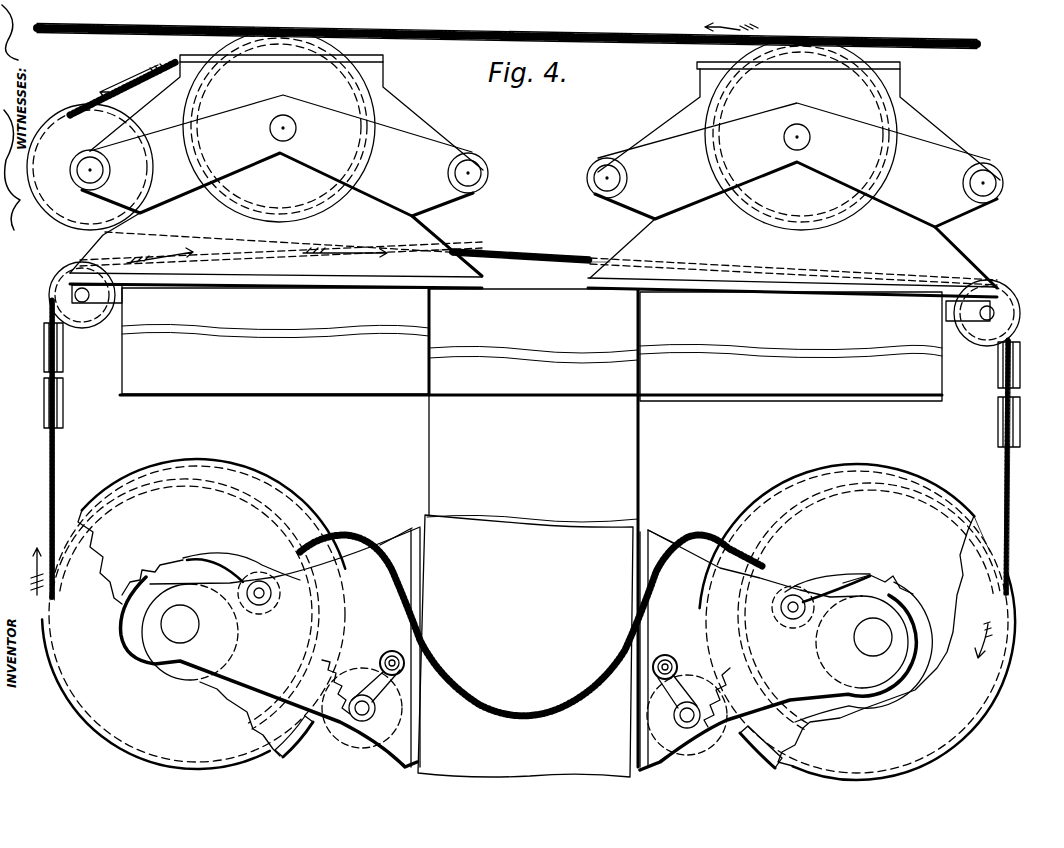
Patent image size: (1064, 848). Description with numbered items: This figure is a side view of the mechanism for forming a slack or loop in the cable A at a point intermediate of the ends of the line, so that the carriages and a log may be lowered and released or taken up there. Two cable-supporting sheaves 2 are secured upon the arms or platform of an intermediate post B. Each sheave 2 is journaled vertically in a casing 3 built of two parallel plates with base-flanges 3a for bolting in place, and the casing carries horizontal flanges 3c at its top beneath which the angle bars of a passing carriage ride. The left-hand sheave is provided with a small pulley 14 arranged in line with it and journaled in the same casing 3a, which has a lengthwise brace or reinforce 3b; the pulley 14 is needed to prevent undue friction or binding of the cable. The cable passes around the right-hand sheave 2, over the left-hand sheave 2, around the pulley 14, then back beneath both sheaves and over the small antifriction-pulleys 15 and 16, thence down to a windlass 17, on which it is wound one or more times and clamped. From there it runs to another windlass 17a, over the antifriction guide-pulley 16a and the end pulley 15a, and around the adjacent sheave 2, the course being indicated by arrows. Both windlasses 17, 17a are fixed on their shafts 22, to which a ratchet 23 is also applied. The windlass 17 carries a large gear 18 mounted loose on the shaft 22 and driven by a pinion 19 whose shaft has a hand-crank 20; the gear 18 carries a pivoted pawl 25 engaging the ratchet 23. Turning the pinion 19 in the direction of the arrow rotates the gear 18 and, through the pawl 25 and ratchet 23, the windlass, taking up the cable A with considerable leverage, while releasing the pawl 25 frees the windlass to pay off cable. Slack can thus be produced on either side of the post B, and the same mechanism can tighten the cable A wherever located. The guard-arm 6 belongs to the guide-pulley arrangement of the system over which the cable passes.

The sheave 2 is at (540, 130).
The casing 3 is at (678, 112).
The casing 3a is at (390, 276).
The lengthwise brace 3b is at (536, 161).
The horizontal flanges 3c is at (292, 58).
The guard-arm 6 is at (532, 344).
The small pulley 14 is at (101, 146).
The antifriction-pulley 15 is at (995, 313).
The end pulley 15a is at (48, 292).
The antifriction-pulley 16 is at (44, 350).
The antifriction guide-pulley 16a is at (44, 400).
The windlass 17 is at (857, 622).
The windlass 17a is at (196, 614).
The gear 18 is at (934, 534).
The pinion 19 is at (350, 735).
The hand-crank 20 is at (524, 703).
The shaft 22 is at (525, 636).
The ratchet 23 is at (918, 612).
The pawl 25 is at (258, 578).
The cable A is at (1021, 528).
The post B is at (531, 532).